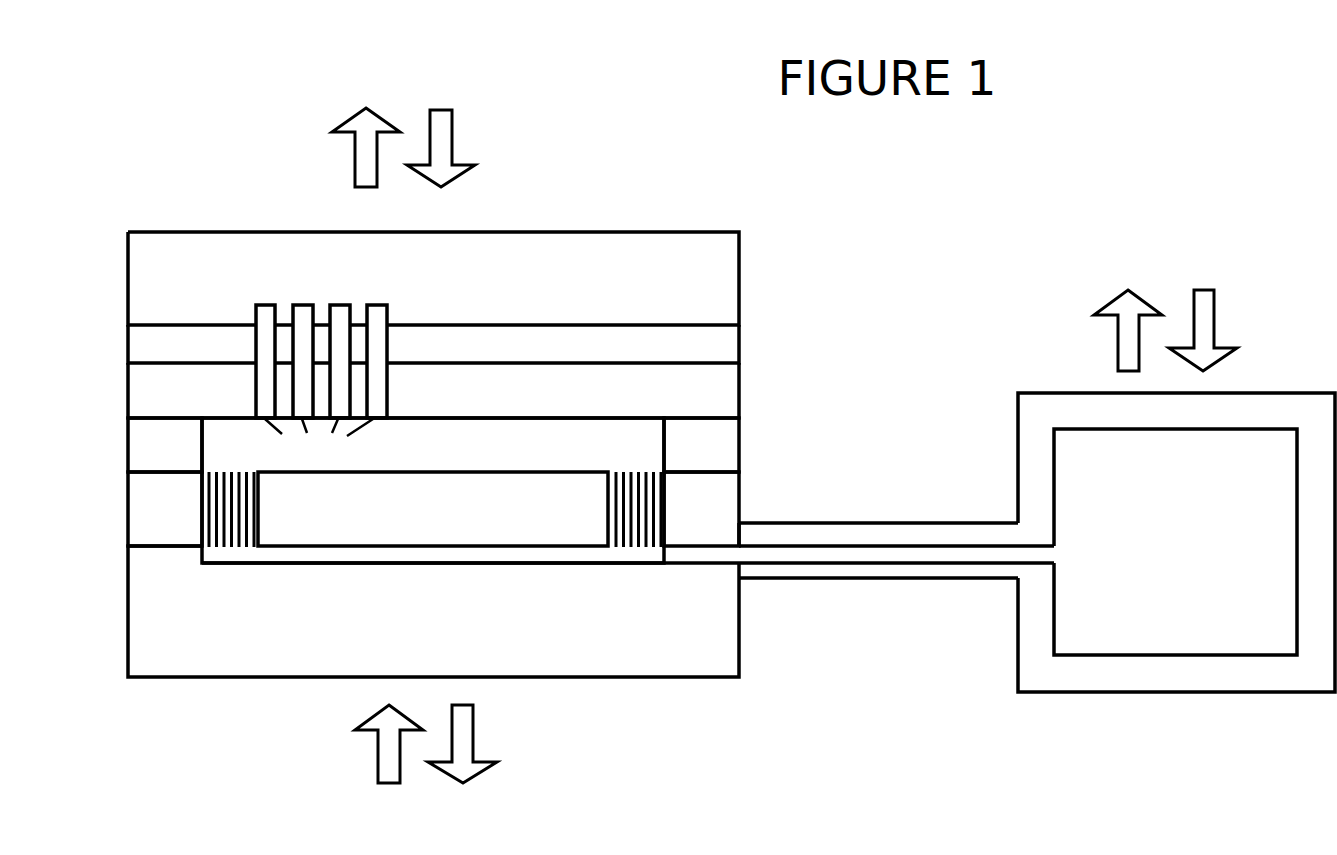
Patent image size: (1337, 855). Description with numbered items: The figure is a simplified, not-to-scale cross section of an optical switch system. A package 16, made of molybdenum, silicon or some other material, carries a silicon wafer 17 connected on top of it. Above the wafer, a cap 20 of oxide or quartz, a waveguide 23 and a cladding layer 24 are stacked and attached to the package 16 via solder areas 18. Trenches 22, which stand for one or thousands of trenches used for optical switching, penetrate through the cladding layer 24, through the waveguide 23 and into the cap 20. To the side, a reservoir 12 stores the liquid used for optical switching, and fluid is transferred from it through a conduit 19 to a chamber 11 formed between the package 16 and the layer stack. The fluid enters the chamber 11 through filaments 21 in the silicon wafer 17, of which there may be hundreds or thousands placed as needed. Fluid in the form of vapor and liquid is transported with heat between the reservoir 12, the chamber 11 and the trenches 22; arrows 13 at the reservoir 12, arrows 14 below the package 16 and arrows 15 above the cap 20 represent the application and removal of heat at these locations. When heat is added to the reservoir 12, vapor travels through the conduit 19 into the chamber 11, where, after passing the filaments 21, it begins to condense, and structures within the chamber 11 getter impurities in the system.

The chamber 11 is at (553, 460).
The reservoir 12 is at (1150, 583).
The arrows 13 is at (1231, 304).
The arrows 14 is at (508, 739).
The arrows 15 is at (468, 142).
The package 16 is at (632, 623).
The silicon wafer 17 is at (148, 515).
The solder areas 18 is at (148, 460).
The conduit 19 is at (840, 547).
The cap 20 is at (698, 268).
The filaments 21 is at (238, 468).
The trenches 22 is at (321, 384).
The waveguide 23 is at (642, 353).
The cladding layer 24 is at (682, 393).